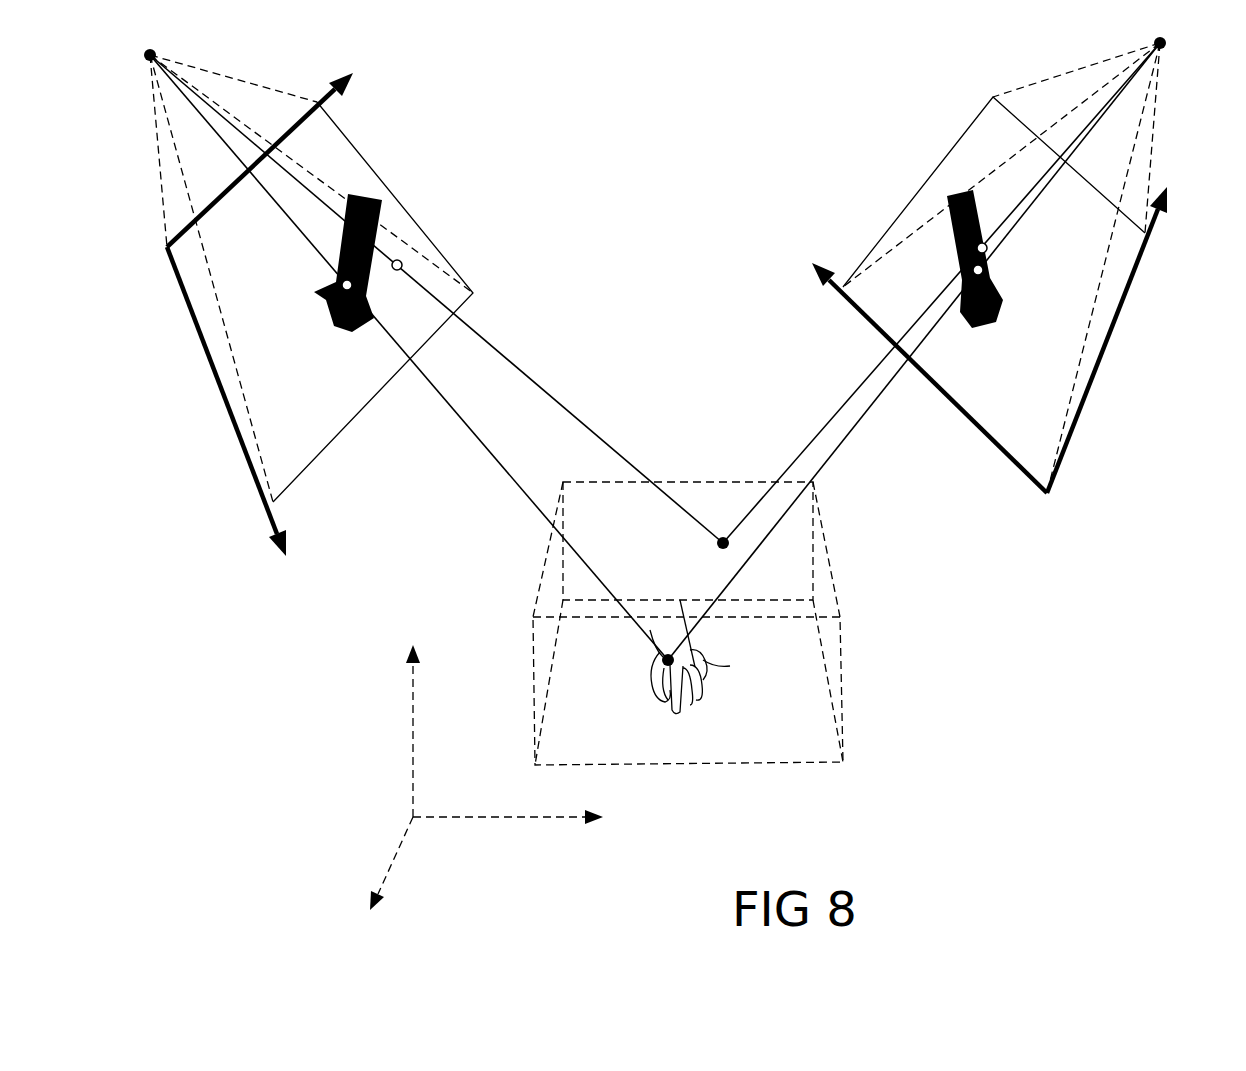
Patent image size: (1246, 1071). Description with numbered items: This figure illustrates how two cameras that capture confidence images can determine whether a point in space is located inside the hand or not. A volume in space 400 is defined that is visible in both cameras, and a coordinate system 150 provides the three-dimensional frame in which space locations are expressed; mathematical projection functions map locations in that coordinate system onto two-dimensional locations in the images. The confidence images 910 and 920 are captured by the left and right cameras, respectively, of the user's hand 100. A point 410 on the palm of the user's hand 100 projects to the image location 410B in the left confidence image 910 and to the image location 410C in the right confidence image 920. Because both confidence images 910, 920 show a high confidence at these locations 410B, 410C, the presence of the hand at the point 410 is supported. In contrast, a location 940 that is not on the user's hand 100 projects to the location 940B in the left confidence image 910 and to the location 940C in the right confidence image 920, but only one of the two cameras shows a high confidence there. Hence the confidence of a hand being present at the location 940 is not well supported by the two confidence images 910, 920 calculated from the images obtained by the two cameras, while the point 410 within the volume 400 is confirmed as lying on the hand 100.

The user's hand 100 is at (652, 672).
The coordinate system 150 is at (341, 867).
The volume in space 400 is at (845, 763).
The point on the palm of the user's hand 410 is at (697, 667).
The image location of point 410 in the left confidence image 410B is at (984, 271).
The image location of point 410 in the right confidence image 410C is at (342, 287).
The left confidence image 910 is at (437, 139).
The right confidence image 920 is at (871, 136).
The location not on the user's hand 940 is at (723, 537).
The image location of point 940 in the left confidence image 940B is at (977, 247).
The image location of point 940 in the right confidence image 940C is at (402, 262).